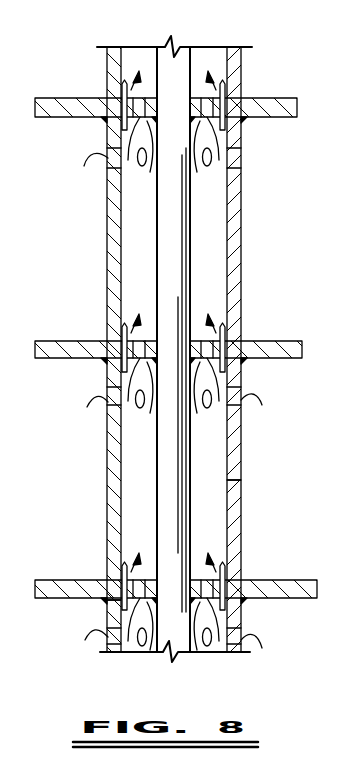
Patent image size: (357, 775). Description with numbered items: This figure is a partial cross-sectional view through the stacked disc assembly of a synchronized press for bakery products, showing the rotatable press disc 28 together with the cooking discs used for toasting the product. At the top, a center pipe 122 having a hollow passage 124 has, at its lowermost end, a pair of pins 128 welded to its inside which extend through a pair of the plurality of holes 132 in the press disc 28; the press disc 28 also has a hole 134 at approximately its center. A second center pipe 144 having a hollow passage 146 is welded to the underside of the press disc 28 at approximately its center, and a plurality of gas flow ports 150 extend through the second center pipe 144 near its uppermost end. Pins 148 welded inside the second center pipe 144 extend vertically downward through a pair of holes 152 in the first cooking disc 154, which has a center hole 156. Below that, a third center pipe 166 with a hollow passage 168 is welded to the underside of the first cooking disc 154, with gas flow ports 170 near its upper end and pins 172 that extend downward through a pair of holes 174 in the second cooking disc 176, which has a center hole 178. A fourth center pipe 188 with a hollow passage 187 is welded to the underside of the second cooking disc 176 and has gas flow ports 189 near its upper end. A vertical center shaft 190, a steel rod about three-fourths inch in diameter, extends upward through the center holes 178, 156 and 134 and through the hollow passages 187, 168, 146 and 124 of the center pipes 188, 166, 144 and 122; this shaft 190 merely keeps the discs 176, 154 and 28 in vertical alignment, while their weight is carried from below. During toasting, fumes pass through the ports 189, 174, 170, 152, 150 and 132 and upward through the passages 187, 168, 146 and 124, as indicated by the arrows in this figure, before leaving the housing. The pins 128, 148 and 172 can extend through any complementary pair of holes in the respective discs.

The press disc 28 is at (275, 98).
The center pipe 122 is at (242, 59).
The hollow passage 124 is at (147, 62).
The pins 128 is at (122, 92).
The holes 132 is at (146, 168).
The hole 134 is at (192, 98).
The second center pipe 144 is at (107, 258).
The hollow passage 146 is at (215, 254).
The pins 148 is at (120, 333).
The gas flow ports 150 is at (222, 166).
The holes 152 is at (145, 410).
The first cooking disc 154 is at (296, 341).
The hole 156 is at (155, 340).
The third center pipe 166 is at (241, 494).
The hollow passage 168 is at (210, 522).
The gas flow ports 170 is at (138, 403).
The pins 172 is at (124, 571).
The holes 174 is at (150, 655).
The second cooking disc 176 is at (301, 580).
The hole 178 is at (157, 580).
The hollow passage 187 is at (128, 646).
The fourth center pipe 188 is at (108, 618).
The gas flow ports 189 is at (118, 628).
The vertical center shaft 190 is at (192, 473).